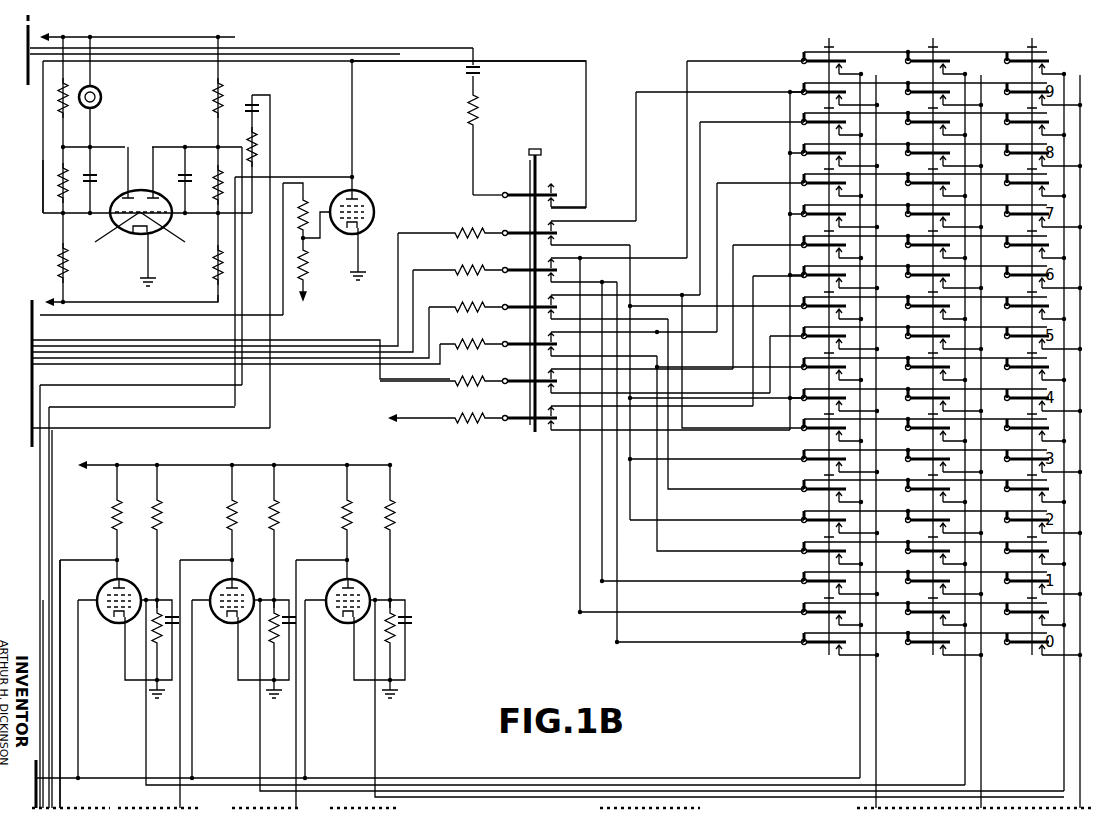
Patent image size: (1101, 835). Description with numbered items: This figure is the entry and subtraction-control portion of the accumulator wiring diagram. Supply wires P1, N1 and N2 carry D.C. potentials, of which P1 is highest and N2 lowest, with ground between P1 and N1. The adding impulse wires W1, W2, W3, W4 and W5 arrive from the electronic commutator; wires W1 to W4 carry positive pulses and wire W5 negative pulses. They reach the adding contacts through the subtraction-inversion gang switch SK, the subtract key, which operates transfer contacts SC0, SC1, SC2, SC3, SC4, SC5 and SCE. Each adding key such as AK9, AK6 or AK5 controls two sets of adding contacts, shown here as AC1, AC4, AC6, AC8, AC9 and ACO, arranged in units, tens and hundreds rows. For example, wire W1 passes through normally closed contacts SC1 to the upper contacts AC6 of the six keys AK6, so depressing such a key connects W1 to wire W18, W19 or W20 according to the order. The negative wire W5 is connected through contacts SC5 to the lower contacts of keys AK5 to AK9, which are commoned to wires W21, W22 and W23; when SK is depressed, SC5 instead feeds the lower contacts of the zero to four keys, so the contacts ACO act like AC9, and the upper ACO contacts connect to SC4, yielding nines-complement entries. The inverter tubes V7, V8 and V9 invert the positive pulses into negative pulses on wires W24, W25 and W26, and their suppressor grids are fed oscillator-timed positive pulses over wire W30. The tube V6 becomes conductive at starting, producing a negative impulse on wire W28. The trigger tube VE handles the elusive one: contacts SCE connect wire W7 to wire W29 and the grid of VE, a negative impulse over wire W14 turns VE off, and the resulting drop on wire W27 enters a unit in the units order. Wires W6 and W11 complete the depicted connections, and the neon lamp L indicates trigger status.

The positive supply wire P1 is at (251, 245).
The negative supply wire N2 is at (214, 364).
The negative supply wire N1 is at (307, 319).
The neon lamp L is at (101, 100).
The wire W29 is at (600, 60).
The wire W14 is at (270, 120).
The wire W6 is at (293, 183).
The wire W11 is at (354, 162).
The wire W7 is at (440, 48).
The tube V6 is at (366, 200).
The trigger tube VE is at (140, 232).
The subtraction-inversion gang switch SK is at (535, 150).
The transfer contacts SCE is at (545, 198).
The transfer contacts SC5 is at (556, 233).
The transfer contacts SC4 is at (556, 270).
The transfer contacts SC3 is at (560, 310).
The transfer contacts SC2 is at (556, 344).
The transfer contacts SC1 is at (545, 384).
The transfer contacts SC0 is at (550, 420).
The adding impulse wire W1 is at (378, 374).
The adding impulse wire W2 is at (440, 352).
The adding impulse wire W3 is at (429, 328).
The adding impulse wire W4 is at (413, 296).
The negative impulse wire W5 is at (398, 313).
The wire W27 is at (50, 508).
The wire W28 is at (42, 527).
The wire W26 is at (100, 545).
The wire W25 is at (210, 555).
The wire W24 is at (330, 555).
The inverter tube V9 is at (116, 620).
The inverter tube V8 is at (236, 620).
The inverter tube V7 is at (348, 620).
The wire W30 is at (138, 777).
The wire W20 is at (860, 685).
The wire W19 is at (965, 685).
The wire W18 is at (1064, 705).
The wire W23 is at (876, 723).
The wire W22 is at (981, 713).
The wire W21 is at (1080, 735).
The adding key AK9 is at (1030, 45).
The adding key AK6 is at (1026, 226).
The adding key AK5 is at (818, 300).
The adding contacts AC9 is at (1035, 90).
The adding contacts AC8 is at (835, 154).
The adding contacts AC6 is at (835, 273).
The adding contacts AC4 is at (817, 404).
The adding contacts AC1 is at (818, 584).
The adding contacts ACO is at (1040, 623).